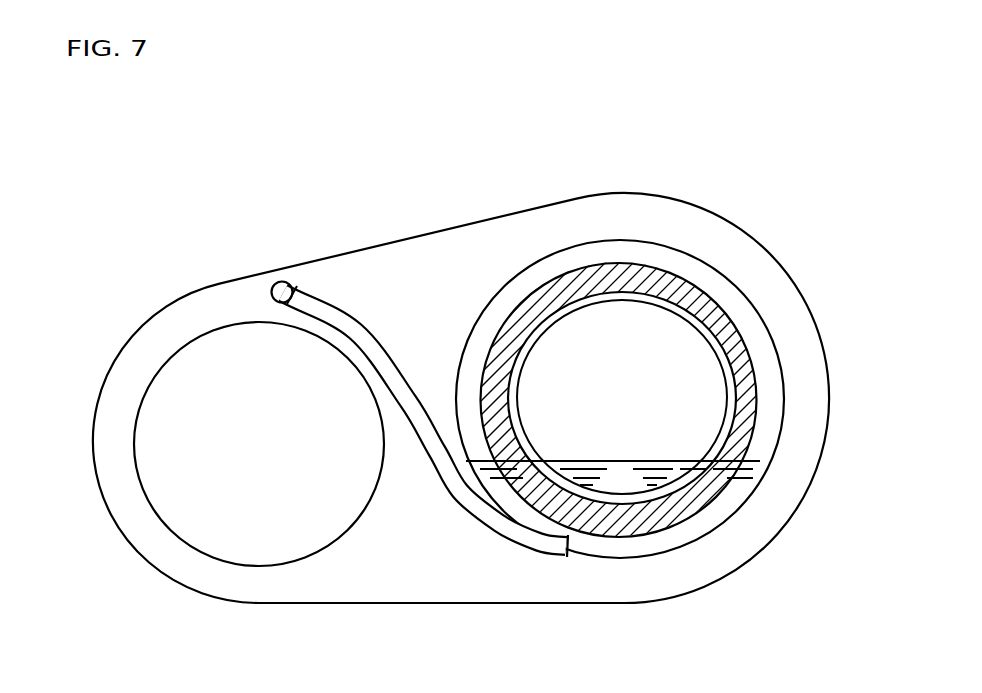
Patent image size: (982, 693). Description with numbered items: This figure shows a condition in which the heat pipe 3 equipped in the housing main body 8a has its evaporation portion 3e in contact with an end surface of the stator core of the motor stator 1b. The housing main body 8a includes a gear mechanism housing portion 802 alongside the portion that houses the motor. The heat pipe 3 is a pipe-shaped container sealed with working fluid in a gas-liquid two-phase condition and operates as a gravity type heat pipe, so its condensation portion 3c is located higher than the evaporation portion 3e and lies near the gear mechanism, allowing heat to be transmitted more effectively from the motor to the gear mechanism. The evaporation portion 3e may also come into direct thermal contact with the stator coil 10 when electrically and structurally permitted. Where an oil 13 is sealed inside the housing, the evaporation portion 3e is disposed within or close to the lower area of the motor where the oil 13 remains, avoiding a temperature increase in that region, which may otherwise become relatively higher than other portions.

The housing main body 8a is at (440, 230).
The gear mechanism housing portion 802 is at (235, 542).
The motor stator 1b is at (657, 542).
The heat pipe 3 is at (433, 430).
The condensation portion 3c is at (312, 305).
The evaporation portion 3e is at (548, 540).
The stator coil 10 is at (672, 280).
The oil 13 is at (707, 477).